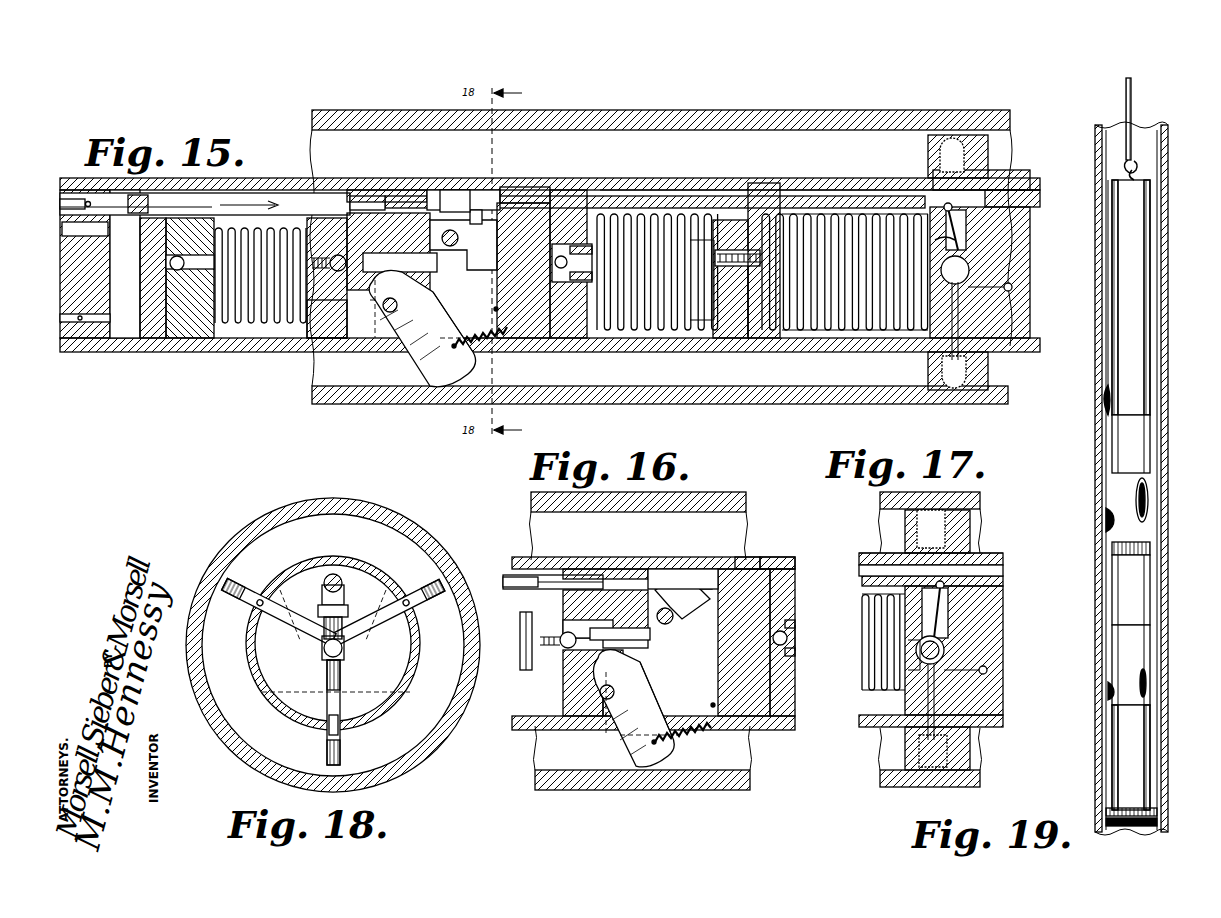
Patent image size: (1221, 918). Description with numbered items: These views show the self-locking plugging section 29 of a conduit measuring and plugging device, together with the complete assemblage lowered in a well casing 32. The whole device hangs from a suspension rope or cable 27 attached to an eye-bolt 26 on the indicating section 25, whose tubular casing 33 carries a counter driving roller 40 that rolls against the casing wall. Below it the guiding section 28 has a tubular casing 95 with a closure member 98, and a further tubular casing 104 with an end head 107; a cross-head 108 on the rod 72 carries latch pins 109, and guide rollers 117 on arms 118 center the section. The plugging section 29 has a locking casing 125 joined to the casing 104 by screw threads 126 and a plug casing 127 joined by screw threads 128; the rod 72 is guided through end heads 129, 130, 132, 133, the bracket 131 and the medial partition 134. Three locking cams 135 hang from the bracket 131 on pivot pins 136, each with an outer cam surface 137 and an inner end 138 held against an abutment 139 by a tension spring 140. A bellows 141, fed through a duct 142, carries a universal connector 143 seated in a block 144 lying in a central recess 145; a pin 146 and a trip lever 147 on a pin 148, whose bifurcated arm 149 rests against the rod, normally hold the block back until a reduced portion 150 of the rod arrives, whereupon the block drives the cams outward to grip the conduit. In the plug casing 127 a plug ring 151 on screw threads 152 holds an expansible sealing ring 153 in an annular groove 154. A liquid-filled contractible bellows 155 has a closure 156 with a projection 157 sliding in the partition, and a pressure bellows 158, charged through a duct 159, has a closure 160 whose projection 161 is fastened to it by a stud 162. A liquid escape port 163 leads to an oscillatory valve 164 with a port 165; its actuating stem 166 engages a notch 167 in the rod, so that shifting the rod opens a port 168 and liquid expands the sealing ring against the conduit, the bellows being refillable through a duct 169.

In FIG. 19, the indicating section 25 is at (1110, 289).
In FIG. 19, the eye-bolt 26 is at (1120, 170).
In FIG. 19, the suspension rope or cable 27 is at (1125, 96).
In FIG. 19, the guiding section 28 is at (1108, 461).
In FIG. 15, the plugging section 29 is at (285, 352).
In FIG. 16, the plugging section 29 is at (654, 557).
In FIG. 17, the plugging section 29 is at (931, 640).
In FIG. 18, the plugging section 29 is at (288, 718).
In FIG. 19, the plugging section 29 is at (1116, 742).
In FIG. 15, the well casing 32 is at (755, 402).
In FIG. 16, the well casing 32 is at (590, 788).
In FIG. 17, the well casing 32 is at (888, 786).
In FIG. 18, the well casing 32 is at (260, 526).
In FIG. 19, the well casing 32 is at (1097, 622).
In FIG. 19, the tubular elongated casing 33 is at (1126, 315).
In FIG. 19, the counter driving roller 40 is at (1100, 398).
In FIG. 15, the rod 72 is at (146, 202).
In FIG. 17, the rod 72 is at (860, 582).
In FIG. 19, the tubular casing 95 is at (1136, 442).
In FIG. 19, the closure member 98 is at (1150, 548).
In FIG. 15, the tubular casing 104 is at (92, 352).
In FIG. 19, the tubular casing 104 is at (1142, 590).
In FIG. 15, the end head 107 is at (150, 285).
In FIG. 15, the cross-head 108 is at (100, 268).
In FIG. 15, the latch pins 109 is at (96, 319).
In FIG. 19, the guide rollers 117 is at (1106, 518).
In FIG. 19, the arms 118 is at (1138, 500).
In FIG. 15, the tubular casing 125 is at (292, 190).
In FIG. 16, the tubular casing 125 is at (528, 576).
In FIG. 19, the tubular casing 125 is at (1142, 650).
In FIG. 15, the screw threads 126 is at (148, 352).
In FIG. 15, the tubular casing 127 is at (712, 180).
In FIG. 16, the tubular casing 127 is at (790, 558).
In FIG. 17, the tubular casing 127 is at (860, 560).
In FIG. 19, the tubular casing 127 is at (1140, 757).
In FIG. 15, the screw threads 128 is at (540, 187).
In FIG. 16, the screw threads 128 is at (766, 558).
In FIG. 15, the end head 129 is at (200, 350).
In FIG. 15, the end head 130 is at (508, 338).
In FIG. 16, the end head 130 is at (734, 724).
In FIG. 15, the bracket 131 is at (396, 193).
In FIG. 16, the bracket 131 is at (598, 576).
In FIG. 15, the end head 132 is at (582, 334).
In FIG. 16, the end head 132 is at (800, 708).
In FIG. 15, the end head 133 is at (1002, 318).
In FIG. 17, the end head 133 is at (954, 650).
In FIG. 15, the medial partition 134 is at (758, 338).
In FIG. 15, the locking cams 135 is at (416, 386).
In FIG. 16, the locking cams 135 is at (616, 770).
In FIG. 18, the locking cams 135 is at (254, 600).
In FIG. 19, the locking cams 135 is at (1106, 692).
In FIG. 15, the pivot pin 136 is at (392, 312).
In FIG. 16, the pivot pin 136 is at (622, 692).
In FIG. 18, the pivot pin 136 is at (410, 650).
In FIG. 15, the cam surface 137 is at (444, 374).
In FIG. 16, the cam surface 137 is at (680, 772).
In FIG. 18, the cam surface 137 is at (428, 600).
In FIG. 15, the inner end 138 is at (346, 293).
In FIG. 16, the inner end 138 is at (642, 664).
In FIG. 15, the abutment 139 is at (346, 314).
In FIG. 16, the abutment 139 is at (584, 688).
In FIG. 15, the tension spring 140 is at (480, 330).
In FIG. 16, the tension spring 140 is at (672, 736).
In FIG. 18, the tension spring 140 is at (340, 726).
In FIG. 15, the bellows 141 is at (272, 280).
In FIG. 16, the bellows 141 is at (520, 672).
In FIG. 15, the duct 142 is at (180, 267).
In FIG. 15, the adjustable universal connector 143 is at (324, 254).
In FIG. 16, the adjustable universal connector 143 is at (552, 632).
In FIG. 15, the block 144 is at (358, 228).
In FIG. 16, the block 144 is at (566, 655).
In FIG. 15, the central recess 145 is at (455, 202).
In FIG. 16, the central recess 145 is at (605, 609).
In FIG. 15, the pin 146 is at (430, 272).
In FIG. 16, the pin 146 is at (680, 647).
In FIG. 18, the pin 146 is at (326, 674).
In FIG. 15, the trip lever 147 is at (460, 260).
In FIG. 16, the trip lever 147 is at (684, 594).
In FIG. 18, the trip lever 147 is at (344, 646).
In FIG. 15, the pin 148 is at (458, 238).
In FIG. 16, the pin 148 is at (660, 610).
In FIG. 18, the pin 148 is at (322, 648).
In FIG. 15, the arm 149 is at (472, 222).
In FIG. 16, the arm 149 is at (706, 570).
In FIG. 18, the arm 149 is at (350, 598).
In FIG. 15, the reduced portion 150 is at (448, 200).
In FIG. 16, the reduced portion 150 is at (666, 587).
In FIG. 18, the reduced portion 150 is at (340, 576).
In FIG. 15, the plug ring 151 is at (932, 148).
In FIG. 17, the plug ring 151 is at (960, 527).
In FIG. 19, the plug ring 151 is at (1160, 828).
In FIG. 15, the screw threads 152 is at (1012, 176).
In FIG. 17, the screw threads 152 is at (985, 556).
In FIG. 15, the expansible sealing ring 153 is at (950, 142).
In FIG. 17, the expansible sealing ring 153 is at (928, 774).
In FIG. 19, the expansible sealing ring 153 is at (1160, 808).
In FIG. 15, the annular groove 154 is at (944, 366).
In FIG. 17, the annular groove 154 is at (912, 755).
In FIG. 15, the contractible bellows 155 is at (850, 304).
In FIG. 17, the contractible bellows 155 is at (880, 686).
In FIG. 15, the closure 156 is at (782, 300).
In FIG. 15, the projection 157 is at (756, 302).
In FIG. 15, the bellows 158 is at (638, 301).
In FIG. 16, the bellows 158 is at (798, 645).
In FIG. 15, the duct 159 is at (562, 258).
In FIG. 16, the duct 159 is at (786, 634).
In FIG. 15, the closure 160 is at (710, 301).
In FIG. 15, the projection 161 is at (730, 252).
In FIG. 15, the stud 162 is at (734, 266).
In FIG. 15, the liquid escape port 163 is at (948, 242).
In FIG. 17, the liquid escape port 163 is at (920, 638).
In FIG. 15, the oscillatory valve 164 is at (966, 262).
In FIG. 17, the oscillatory valve 164 is at (940, 652).
In FIG. 15, the valve port 165 is at (968, 276).
In FIG. 17, the valve port 165 is at (942, 640).
In FIG. 15, the actuating stem 166 is at (972, 232).
In FIG. 17, the actuating stem 166 is at (948, 610).
In FIG. 15, the notch 167 is at (946, 204).
In FIG. 17, the notch 167 is at (946, 587).
In FIG. 15, the port 168 is at (1012, 289).
In FIG. 15, the duct 169 is at (950, 300).
In FIG. 17, the duct 169 is at (988, 672).